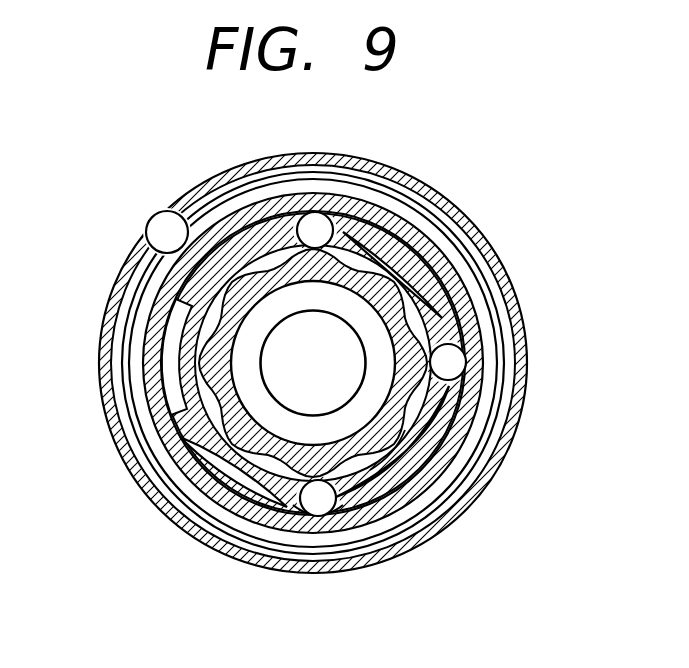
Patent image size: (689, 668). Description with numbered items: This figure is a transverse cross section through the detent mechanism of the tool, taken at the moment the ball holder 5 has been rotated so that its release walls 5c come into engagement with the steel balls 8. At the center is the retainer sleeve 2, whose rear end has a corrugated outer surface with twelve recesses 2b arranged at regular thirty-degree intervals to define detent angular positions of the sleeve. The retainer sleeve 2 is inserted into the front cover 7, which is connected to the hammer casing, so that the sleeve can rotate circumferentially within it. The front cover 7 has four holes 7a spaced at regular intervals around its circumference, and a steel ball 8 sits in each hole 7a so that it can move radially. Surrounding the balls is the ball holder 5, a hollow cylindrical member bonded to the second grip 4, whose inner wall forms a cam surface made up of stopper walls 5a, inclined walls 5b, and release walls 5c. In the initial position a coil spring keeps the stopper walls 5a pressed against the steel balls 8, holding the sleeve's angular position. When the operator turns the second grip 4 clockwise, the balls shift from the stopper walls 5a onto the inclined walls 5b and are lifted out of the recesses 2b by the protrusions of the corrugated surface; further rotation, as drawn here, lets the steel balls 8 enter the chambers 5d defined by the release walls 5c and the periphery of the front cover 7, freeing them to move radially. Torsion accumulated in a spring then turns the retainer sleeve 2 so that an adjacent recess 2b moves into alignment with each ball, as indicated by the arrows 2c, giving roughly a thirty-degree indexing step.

The retainer sleeve 2 is at (215, 292).
The recesses 2b is at (386, 480).
The arrows 2c is at (207, 192).
The second grip 4 is at (523, 430).
The ball holder 5 is at (433, 473).
The stopper walls 5a is at (460, 276).
The inclined walls 5b is at (430, 236).
The release walls 5c is at (428, 198).
The chambers 5d is at (393, 172).
The front cover 7 is at (140, 471).
The holes 7a is at (292, 508).
The steel balls 8 is at (315, 232).